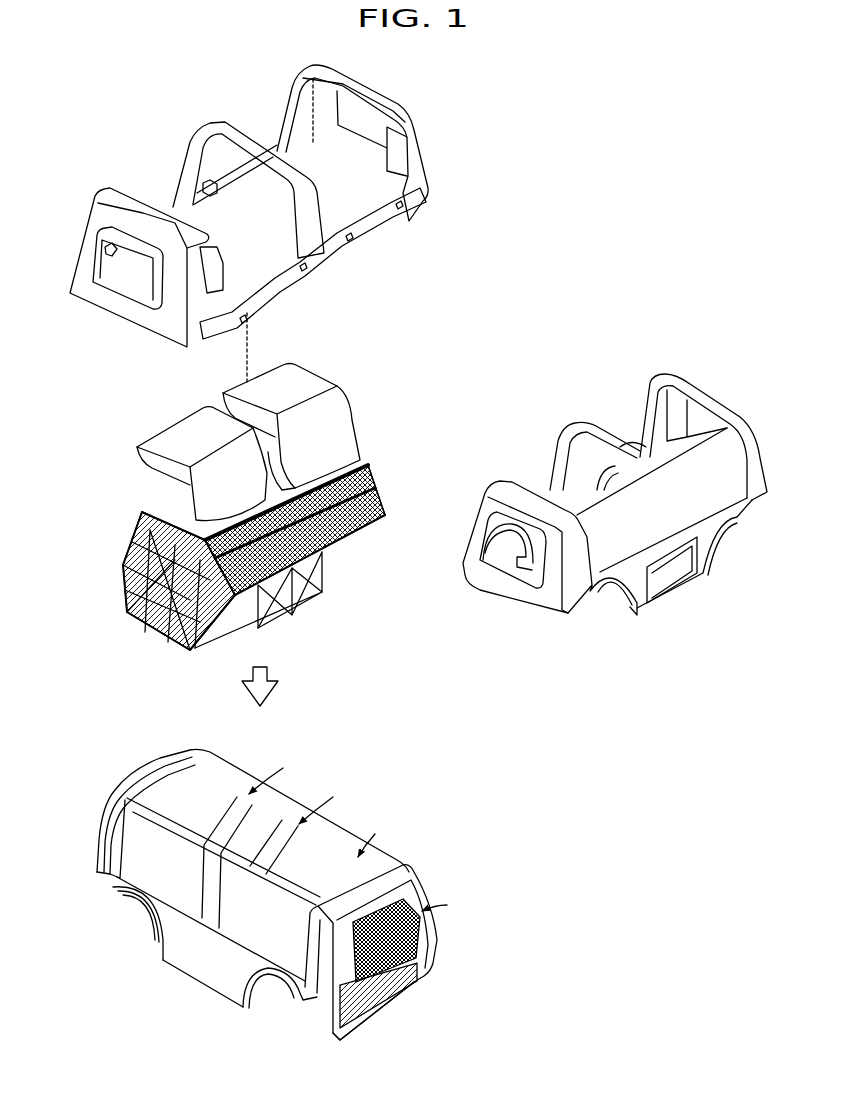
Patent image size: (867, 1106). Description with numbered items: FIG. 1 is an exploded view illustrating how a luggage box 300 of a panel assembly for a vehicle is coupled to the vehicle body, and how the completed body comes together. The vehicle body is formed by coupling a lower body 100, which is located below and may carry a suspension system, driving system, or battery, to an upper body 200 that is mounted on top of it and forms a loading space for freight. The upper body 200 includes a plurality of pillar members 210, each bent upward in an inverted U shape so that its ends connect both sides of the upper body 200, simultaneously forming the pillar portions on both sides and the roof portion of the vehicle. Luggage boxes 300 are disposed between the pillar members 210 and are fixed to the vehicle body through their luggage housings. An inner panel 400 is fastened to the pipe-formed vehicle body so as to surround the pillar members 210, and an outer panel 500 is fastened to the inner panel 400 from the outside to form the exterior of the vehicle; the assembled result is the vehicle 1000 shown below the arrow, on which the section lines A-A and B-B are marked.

The lower body 100 is at (137, 631).
The upper body 200 is at (374, 474).
The pillar members 210 is at (355, 545).
The luggage box 300 is at (166, 437).
The inner panel 400 is at (167, 143).
The outer panel 500 is at (700, 381).
The assembled vehicle body 1000 is at (357, 812).